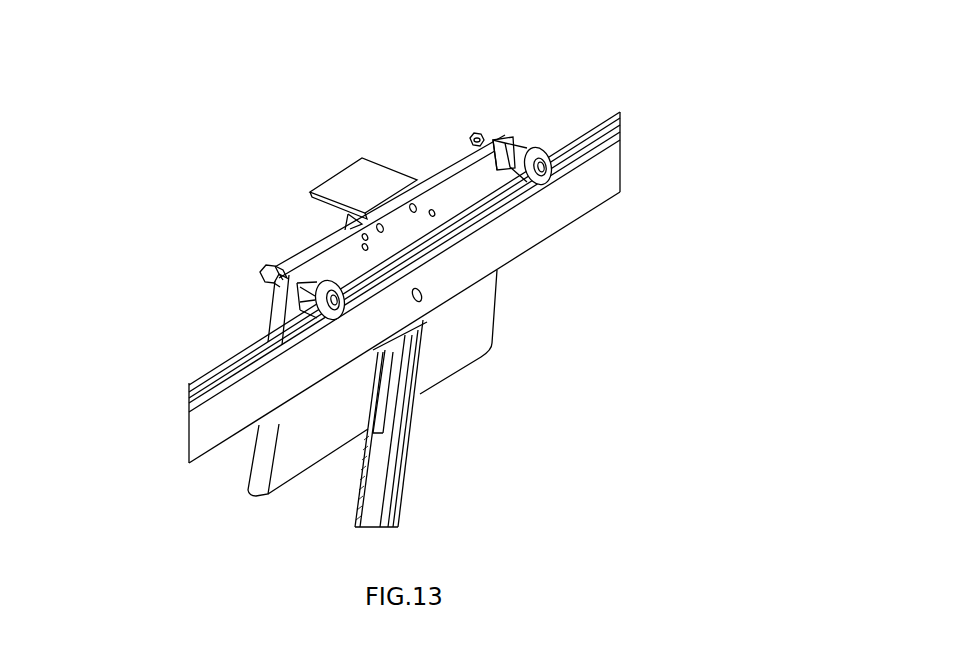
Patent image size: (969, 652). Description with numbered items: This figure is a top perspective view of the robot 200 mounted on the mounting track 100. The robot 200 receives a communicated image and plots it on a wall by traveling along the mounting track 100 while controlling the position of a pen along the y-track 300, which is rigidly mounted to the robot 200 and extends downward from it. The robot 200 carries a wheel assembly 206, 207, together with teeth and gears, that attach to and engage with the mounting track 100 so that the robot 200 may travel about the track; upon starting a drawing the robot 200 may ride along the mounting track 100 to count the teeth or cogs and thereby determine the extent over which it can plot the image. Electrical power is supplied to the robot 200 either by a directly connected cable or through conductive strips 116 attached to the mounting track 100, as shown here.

The mounting track 100 is at (587, 187).
The conductive strips 116 is at (189, 390).
The robot 200 is at (470, 341).
The wheel assembly 206 is at (534, 143).
The wheel assembly 207 is at (283, 298).
The y-track 300 is at (405, 467).